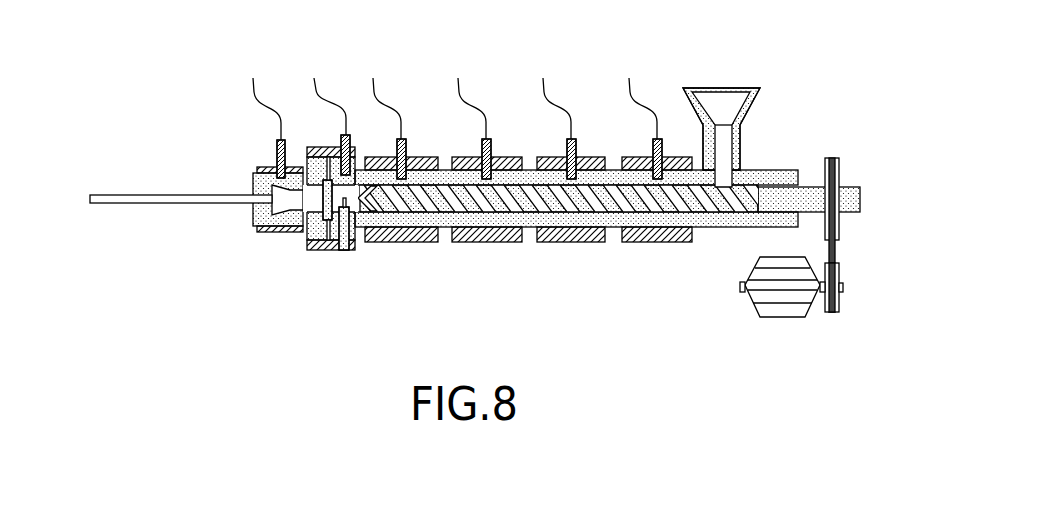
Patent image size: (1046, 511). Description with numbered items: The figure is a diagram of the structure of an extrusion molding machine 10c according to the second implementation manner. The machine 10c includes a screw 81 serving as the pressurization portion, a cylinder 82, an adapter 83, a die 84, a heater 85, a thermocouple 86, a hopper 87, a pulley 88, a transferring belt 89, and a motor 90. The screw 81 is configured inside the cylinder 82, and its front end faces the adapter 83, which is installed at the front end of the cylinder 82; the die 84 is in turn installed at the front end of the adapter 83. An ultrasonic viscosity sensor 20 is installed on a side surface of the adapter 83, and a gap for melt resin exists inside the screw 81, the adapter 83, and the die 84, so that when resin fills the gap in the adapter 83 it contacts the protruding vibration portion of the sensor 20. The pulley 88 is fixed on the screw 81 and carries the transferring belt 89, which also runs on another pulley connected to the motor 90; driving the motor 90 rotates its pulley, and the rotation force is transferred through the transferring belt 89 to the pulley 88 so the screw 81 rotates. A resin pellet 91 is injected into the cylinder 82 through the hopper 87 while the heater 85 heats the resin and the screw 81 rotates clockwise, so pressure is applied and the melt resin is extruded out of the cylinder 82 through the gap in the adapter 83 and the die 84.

The molding machine 10c is at (673, 37).
The ultrasonic viscosity sensor 20 is at (343, 250).
The screw 81 is at (717, 207).
The cylinder 82 is at (772, 170).
The adapter 83 is at (317, 250).
The die 84 is at (266, 227).
The heater 85 is at (575, 242).
The thermocouple 86 is at (578, 142).
The hopper 87 is at (725, 116).
The pulley 88 is at (840, 165).
The transferring belt 89 is at (838, 248).
The motor 90 is at (784, 318).
The resin pellet 91 is at (718, 88).